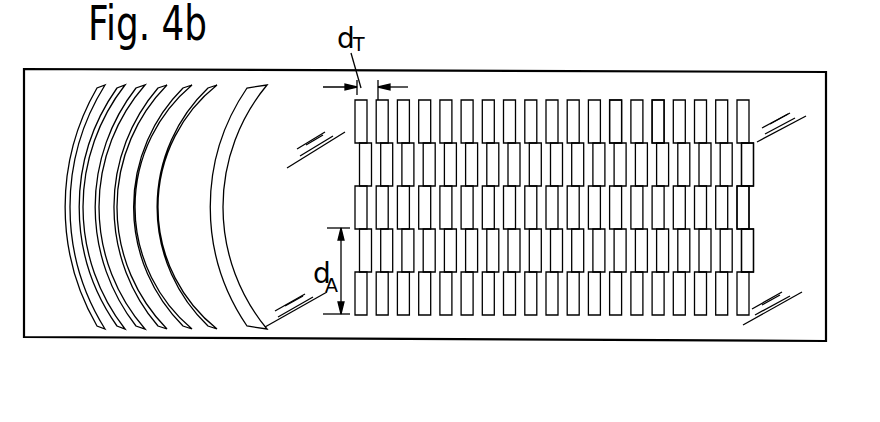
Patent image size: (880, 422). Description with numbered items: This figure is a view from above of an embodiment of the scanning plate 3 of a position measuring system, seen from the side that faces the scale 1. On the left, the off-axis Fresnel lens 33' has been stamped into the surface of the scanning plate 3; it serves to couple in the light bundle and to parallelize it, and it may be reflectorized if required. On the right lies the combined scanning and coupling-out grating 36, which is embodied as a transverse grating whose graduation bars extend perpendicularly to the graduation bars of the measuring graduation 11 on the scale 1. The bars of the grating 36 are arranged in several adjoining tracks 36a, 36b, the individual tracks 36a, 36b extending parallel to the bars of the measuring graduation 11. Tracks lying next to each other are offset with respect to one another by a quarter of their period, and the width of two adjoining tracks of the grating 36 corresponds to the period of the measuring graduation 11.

The scale 1 is at (425, 245).
The scanning plate 3 is at (487, 71).
The measuring graduation 11 is at (783, 8).
The off-axis Fresnel lens 33' is at (166, 253).
The combined scanning and coupling-out grating 36 is at (607, 103).
The first track of the scanning and coupling-out grating 36a is at (658, 110).
The second track of the scanning and coupling-out grating 36b is at (748, 165).